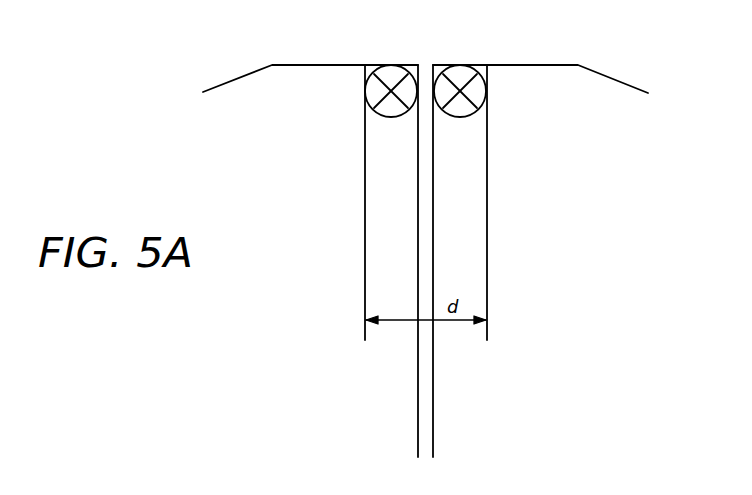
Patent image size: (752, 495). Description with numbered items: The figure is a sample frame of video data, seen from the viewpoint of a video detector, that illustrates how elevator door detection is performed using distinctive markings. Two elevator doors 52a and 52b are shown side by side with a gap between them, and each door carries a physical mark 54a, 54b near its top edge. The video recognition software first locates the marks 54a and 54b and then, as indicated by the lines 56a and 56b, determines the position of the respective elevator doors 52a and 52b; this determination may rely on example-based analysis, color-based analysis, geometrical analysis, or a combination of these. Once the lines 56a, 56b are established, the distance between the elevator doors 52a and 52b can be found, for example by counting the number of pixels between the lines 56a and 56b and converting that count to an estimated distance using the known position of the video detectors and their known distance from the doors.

The elevator door 52a is at (310, 261).
The elevator door 52b is at (540, 261).
The physical mark 54a is at (384, 66).
The physical mark 54b is at (455, 66).
The line 56a is at (365, 183).
The line 56b is at (487, 176).